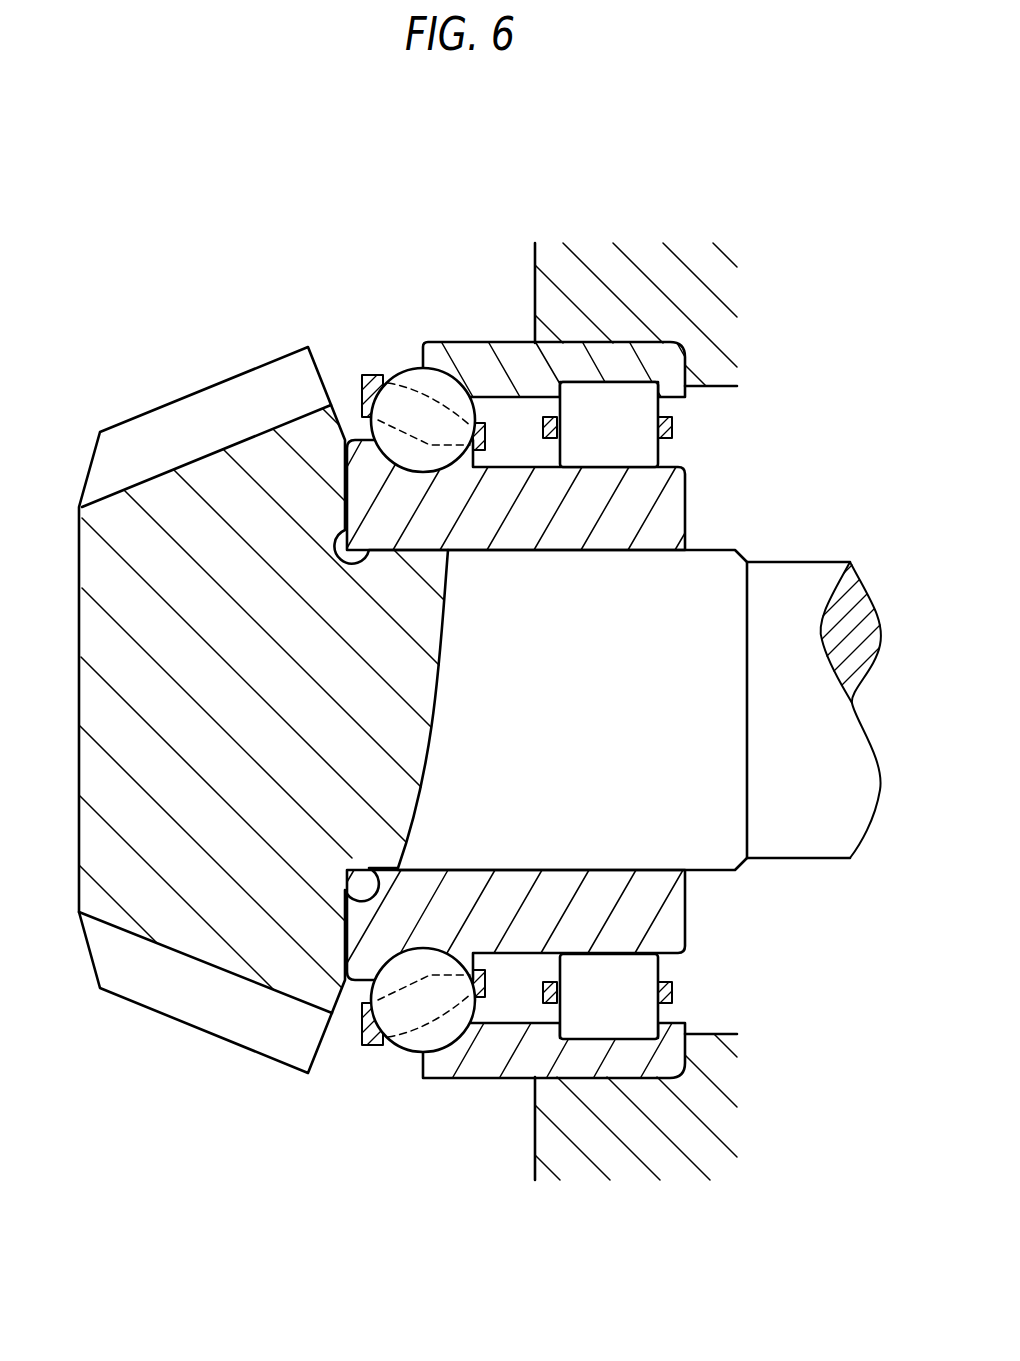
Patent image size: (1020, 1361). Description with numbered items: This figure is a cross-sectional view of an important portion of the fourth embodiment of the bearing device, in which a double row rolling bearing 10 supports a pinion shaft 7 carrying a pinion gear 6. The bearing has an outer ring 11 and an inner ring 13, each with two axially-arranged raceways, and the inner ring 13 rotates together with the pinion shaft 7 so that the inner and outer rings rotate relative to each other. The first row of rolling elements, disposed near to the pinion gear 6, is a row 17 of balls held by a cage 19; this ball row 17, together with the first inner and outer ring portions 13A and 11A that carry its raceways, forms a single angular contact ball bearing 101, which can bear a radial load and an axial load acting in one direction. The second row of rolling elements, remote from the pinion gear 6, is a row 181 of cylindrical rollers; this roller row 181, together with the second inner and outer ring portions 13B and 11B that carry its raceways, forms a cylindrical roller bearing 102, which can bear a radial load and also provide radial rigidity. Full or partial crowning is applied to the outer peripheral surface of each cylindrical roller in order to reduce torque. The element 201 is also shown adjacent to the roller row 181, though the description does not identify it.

The pinion gear 6 is at (118, 668).
The pinion shaft 7 is at (707, 842).
The double row rolling bearing 10 is at (678, 711).
The cylindrical roller bearing 102 is at (687, 328).
The single angular contact ball bearing 101 is at (369, 233).
The outer ring 11 is at (554, 608).
The first outer ring portion 11A is at (453, 352).
The second outer ring portion 11B is at (598, 362).
The inner ring 13 is at (516, 710).
The first inner ring portion 13A is at (435, 530).
The second inner ring portion 13B is at (495, 625).
The row of balls 17 is at (415, 378).
The cage 19 is at (367, 375).
The row of cylindrical rollers 181 is at (607, 403).
The seal member 201 is at (676, 427).